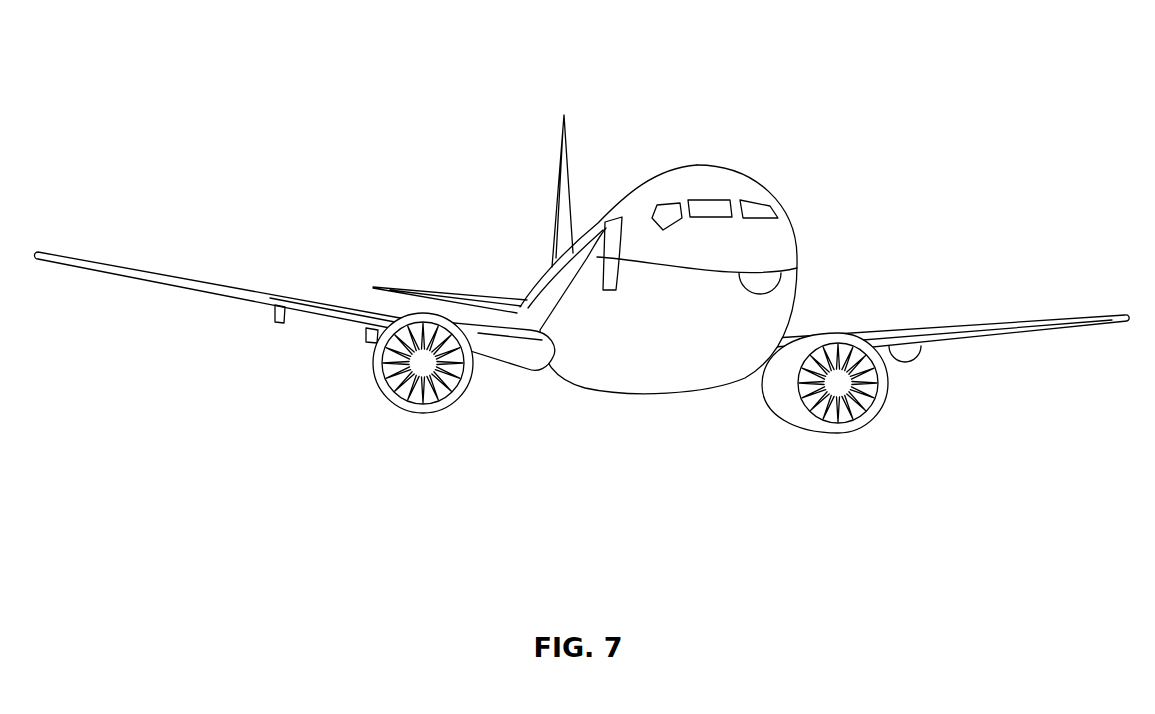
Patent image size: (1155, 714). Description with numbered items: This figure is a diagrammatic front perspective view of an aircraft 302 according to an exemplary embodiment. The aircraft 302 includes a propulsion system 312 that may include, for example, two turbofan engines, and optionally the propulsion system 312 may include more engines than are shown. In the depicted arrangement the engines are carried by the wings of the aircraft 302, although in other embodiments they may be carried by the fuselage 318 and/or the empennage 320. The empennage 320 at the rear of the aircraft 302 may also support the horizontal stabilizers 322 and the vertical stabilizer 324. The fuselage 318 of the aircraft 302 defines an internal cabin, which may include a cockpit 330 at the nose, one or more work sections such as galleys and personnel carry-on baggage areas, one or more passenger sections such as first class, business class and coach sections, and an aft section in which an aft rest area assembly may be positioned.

The aircraft 302 is at (315, 62).
The propulsion system 312 is at (925, 422).
The fuselage 318 is at (798, 234).
The empennage 320 is at (548, 266).
The horizontal stabilizers 322 is at (413, 288).
The vertical stabilizer 324 is at (562, 154).
The cockpit 330 is at (717, 200).